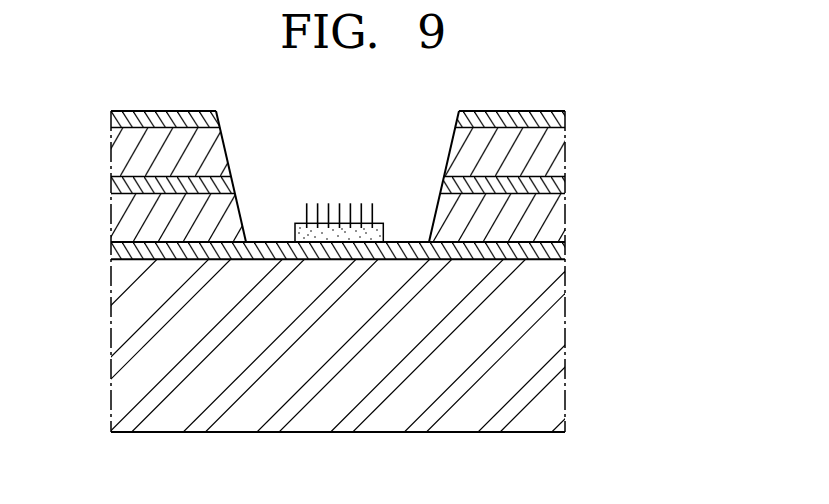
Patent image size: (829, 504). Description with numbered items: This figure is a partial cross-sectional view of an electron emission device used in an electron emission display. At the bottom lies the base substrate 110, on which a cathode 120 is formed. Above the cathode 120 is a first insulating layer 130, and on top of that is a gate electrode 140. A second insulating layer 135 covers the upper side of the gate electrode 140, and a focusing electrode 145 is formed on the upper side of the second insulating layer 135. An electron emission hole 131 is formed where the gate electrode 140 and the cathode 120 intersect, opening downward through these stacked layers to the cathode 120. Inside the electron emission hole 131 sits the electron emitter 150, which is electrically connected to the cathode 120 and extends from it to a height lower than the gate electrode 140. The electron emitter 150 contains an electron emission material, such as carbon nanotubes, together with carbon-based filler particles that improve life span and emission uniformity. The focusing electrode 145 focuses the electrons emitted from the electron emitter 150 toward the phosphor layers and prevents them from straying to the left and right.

The base substrate 110 is at (559, 342).
The cathode 120 is at (559, 254).
The first insulating layer 130 is at (559, 217).
The electron emission hole 131 is at (352, 174).
The second insulating layer 135 is at (559, 155).
The gate electrode 140 is at (559, 185).
The focusing electrode 145 is at (559, 116).
The electron emitter 150 is at (286, 198).